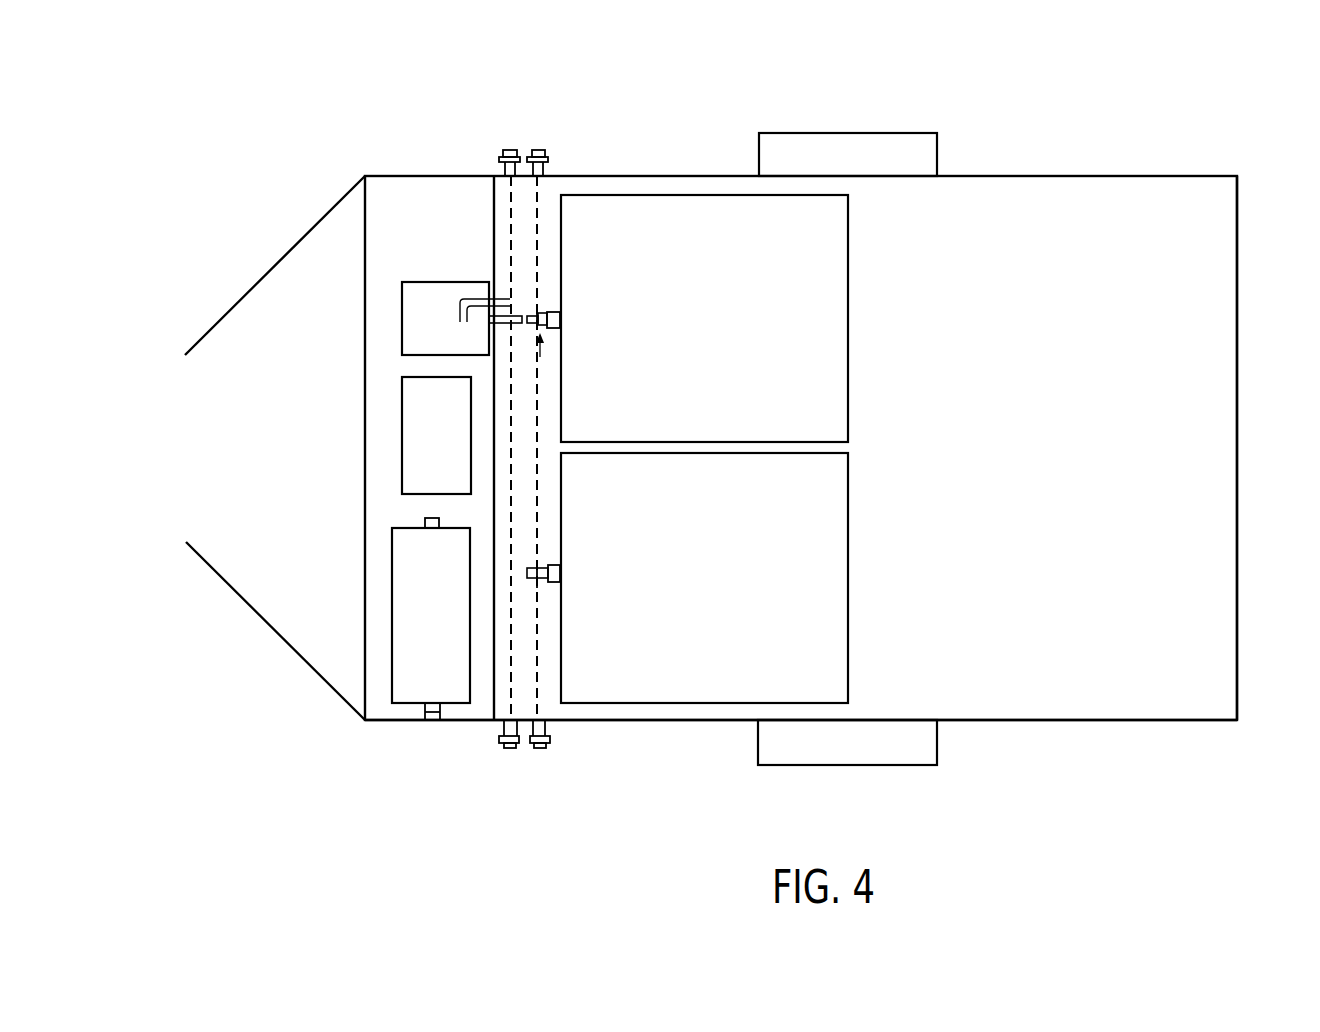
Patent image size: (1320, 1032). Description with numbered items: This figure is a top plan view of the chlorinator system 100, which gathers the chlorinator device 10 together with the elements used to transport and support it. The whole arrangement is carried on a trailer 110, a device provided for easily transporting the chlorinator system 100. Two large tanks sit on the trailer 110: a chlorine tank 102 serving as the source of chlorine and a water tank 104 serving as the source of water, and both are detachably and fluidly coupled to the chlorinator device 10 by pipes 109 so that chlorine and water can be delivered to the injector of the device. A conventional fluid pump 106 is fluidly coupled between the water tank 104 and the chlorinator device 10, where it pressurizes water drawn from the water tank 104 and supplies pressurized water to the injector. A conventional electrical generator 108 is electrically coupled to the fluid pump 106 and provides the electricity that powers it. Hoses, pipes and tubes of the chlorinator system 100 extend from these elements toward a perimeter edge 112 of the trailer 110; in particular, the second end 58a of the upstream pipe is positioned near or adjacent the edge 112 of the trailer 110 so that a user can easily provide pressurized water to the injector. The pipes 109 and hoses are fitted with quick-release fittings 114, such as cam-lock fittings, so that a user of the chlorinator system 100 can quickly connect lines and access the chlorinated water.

The chlorinator system 100 is at (1026, 115).
The chlorine tank 102 is at (833, 570).
The water tank 104 is at (833, 282).
The fluid pump 106 is at (422, 295).
The electrical generator 108 is at (415, 435).
The pipes 109 is at (537, 683).
The trailer 110 is at (1215, 477).
The perimeter edge 112 is at (1028, 721).
The quick-release fittings 114 is at (507, 747).
The chlorinator device 10 is at (433, 668).
The second end of the upstream pipe 58a is at (432, 713).